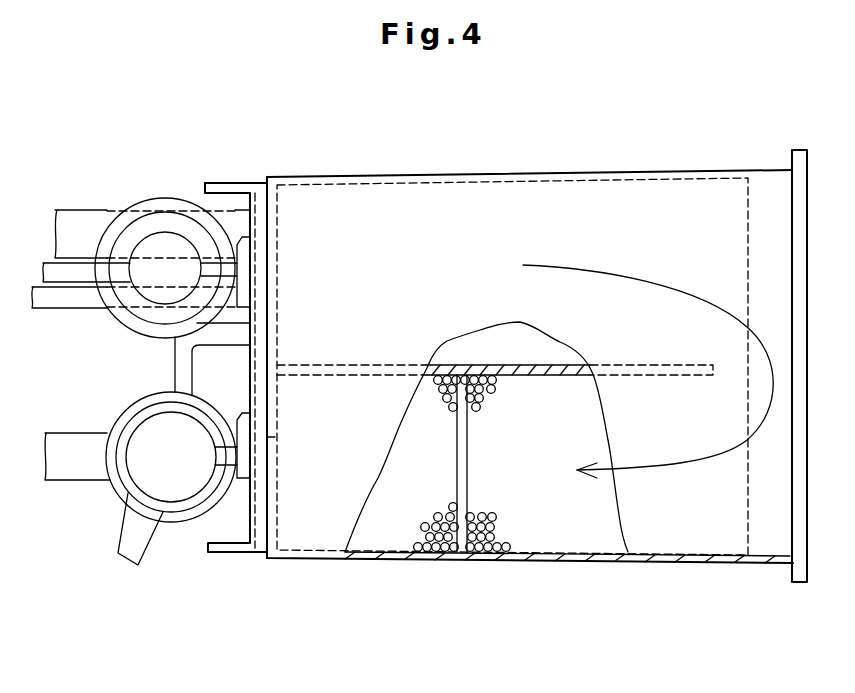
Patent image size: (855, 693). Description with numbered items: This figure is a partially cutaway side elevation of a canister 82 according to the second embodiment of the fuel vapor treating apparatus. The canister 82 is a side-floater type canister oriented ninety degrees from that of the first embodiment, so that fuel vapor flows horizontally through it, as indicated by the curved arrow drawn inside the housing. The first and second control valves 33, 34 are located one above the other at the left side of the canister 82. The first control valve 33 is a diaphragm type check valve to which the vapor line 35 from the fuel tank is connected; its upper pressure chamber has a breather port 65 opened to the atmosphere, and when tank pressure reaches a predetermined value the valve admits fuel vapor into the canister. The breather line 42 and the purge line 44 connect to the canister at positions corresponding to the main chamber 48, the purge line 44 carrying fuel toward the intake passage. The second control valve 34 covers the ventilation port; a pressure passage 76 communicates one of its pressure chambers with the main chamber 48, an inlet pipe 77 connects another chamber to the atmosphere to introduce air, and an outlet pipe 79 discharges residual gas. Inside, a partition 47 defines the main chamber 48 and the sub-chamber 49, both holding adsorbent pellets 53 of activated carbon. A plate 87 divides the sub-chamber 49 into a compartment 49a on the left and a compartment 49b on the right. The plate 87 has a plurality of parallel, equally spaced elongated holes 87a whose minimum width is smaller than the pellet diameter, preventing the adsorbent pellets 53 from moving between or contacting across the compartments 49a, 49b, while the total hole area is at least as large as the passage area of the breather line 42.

The first control valve 33 is at (163, 196).
The second control valve 34 is at (128, 500).
The vapor line 35 is at (61, 310).
The breather line 42 is at (81, 209).
The purge line 44 is at (40, 262).
The partition 47 is at (478, 365).
The main chamber 48 is at (586, 197).
The sub-chamber 49 is at (535, 608).
The compartment 49a is at (385, 552).
The compartment 49b is at (548, 552).
The adsorbent pellets 53 is at (441, 385).
The breather port 65 is at (212, 256).
The pressure passage 76 is at (175, 371).
The inlet pipe 77 is at (150, 556).
The outlet pipe 79 is at (80, 432).
The canister 82 is at (408, 176).
The plate 87 is at (468, 487).
The elongated holes 87a is at (460, 394).